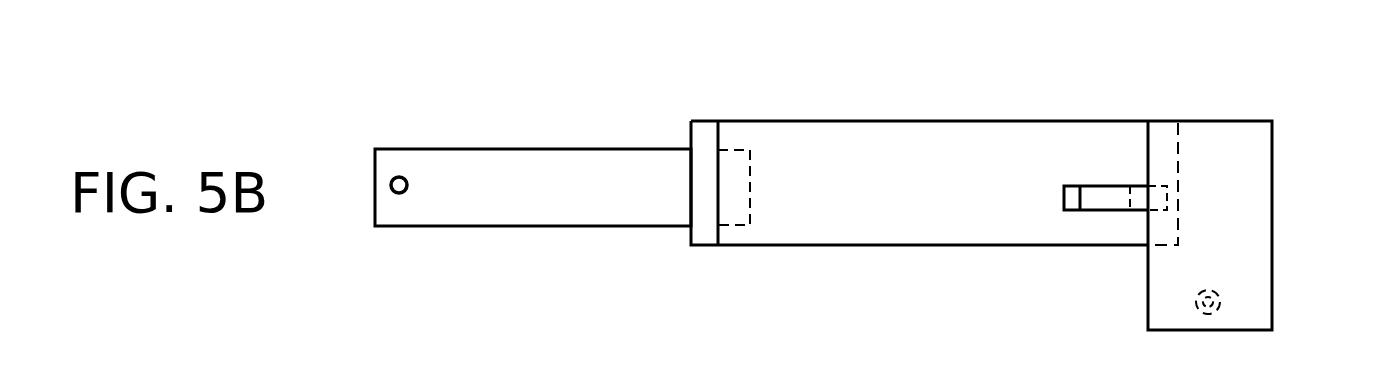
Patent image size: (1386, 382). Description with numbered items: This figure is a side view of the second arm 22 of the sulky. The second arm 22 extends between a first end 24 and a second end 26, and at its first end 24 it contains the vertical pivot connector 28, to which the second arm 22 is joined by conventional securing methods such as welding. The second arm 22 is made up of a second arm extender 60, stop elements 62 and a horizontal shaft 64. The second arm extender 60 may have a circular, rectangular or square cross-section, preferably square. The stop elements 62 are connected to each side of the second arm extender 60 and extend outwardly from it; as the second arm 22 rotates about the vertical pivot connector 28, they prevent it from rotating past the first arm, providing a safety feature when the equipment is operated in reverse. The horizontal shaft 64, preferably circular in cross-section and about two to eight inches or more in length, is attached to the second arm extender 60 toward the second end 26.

The second arm 22 is at (1027, 177).
The first end of second arm 24 is at (1284, 193).
The second end of second arm 26 is at (484, 135).
The vertical pivot connector 28 is at (1212, 157).
The second arm extender 60 is at (882, 219).
The stop elements 62 is at (1115, 200).
The horizontal shaft 64 is at (523, 182).